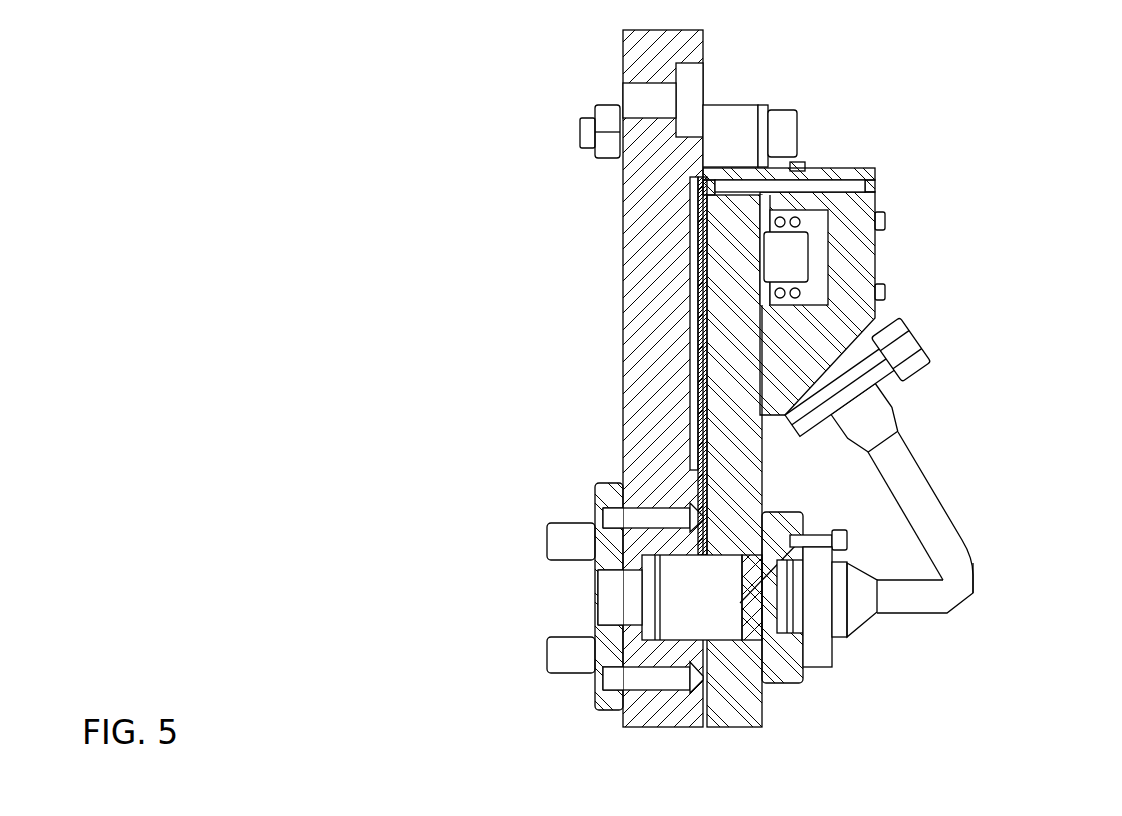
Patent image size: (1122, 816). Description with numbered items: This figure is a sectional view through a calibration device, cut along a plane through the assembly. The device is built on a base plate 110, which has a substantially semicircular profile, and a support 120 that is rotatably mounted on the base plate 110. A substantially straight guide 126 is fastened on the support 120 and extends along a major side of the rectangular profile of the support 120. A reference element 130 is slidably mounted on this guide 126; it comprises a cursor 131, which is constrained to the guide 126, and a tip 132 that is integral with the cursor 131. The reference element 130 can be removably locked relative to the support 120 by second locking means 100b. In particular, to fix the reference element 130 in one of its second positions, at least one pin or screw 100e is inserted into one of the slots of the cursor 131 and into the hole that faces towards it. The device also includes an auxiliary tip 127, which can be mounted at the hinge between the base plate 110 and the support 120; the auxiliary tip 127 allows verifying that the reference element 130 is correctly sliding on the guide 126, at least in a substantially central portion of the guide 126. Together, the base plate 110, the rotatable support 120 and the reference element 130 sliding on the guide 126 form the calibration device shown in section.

The base plate 110 is at (612, 281).
The support 120 is at (695, 414).
The guide 126 is at (815, 234).
The cursor 131 is at (873, 258).
The reference element 130 is at (932, 324).
The tip 132 is at (940, 510).
The auxiliary tip 127 is at (910, 605).
The second locking means 100b is at (808, 162).
The pin or screw 100e is at (825, 182).